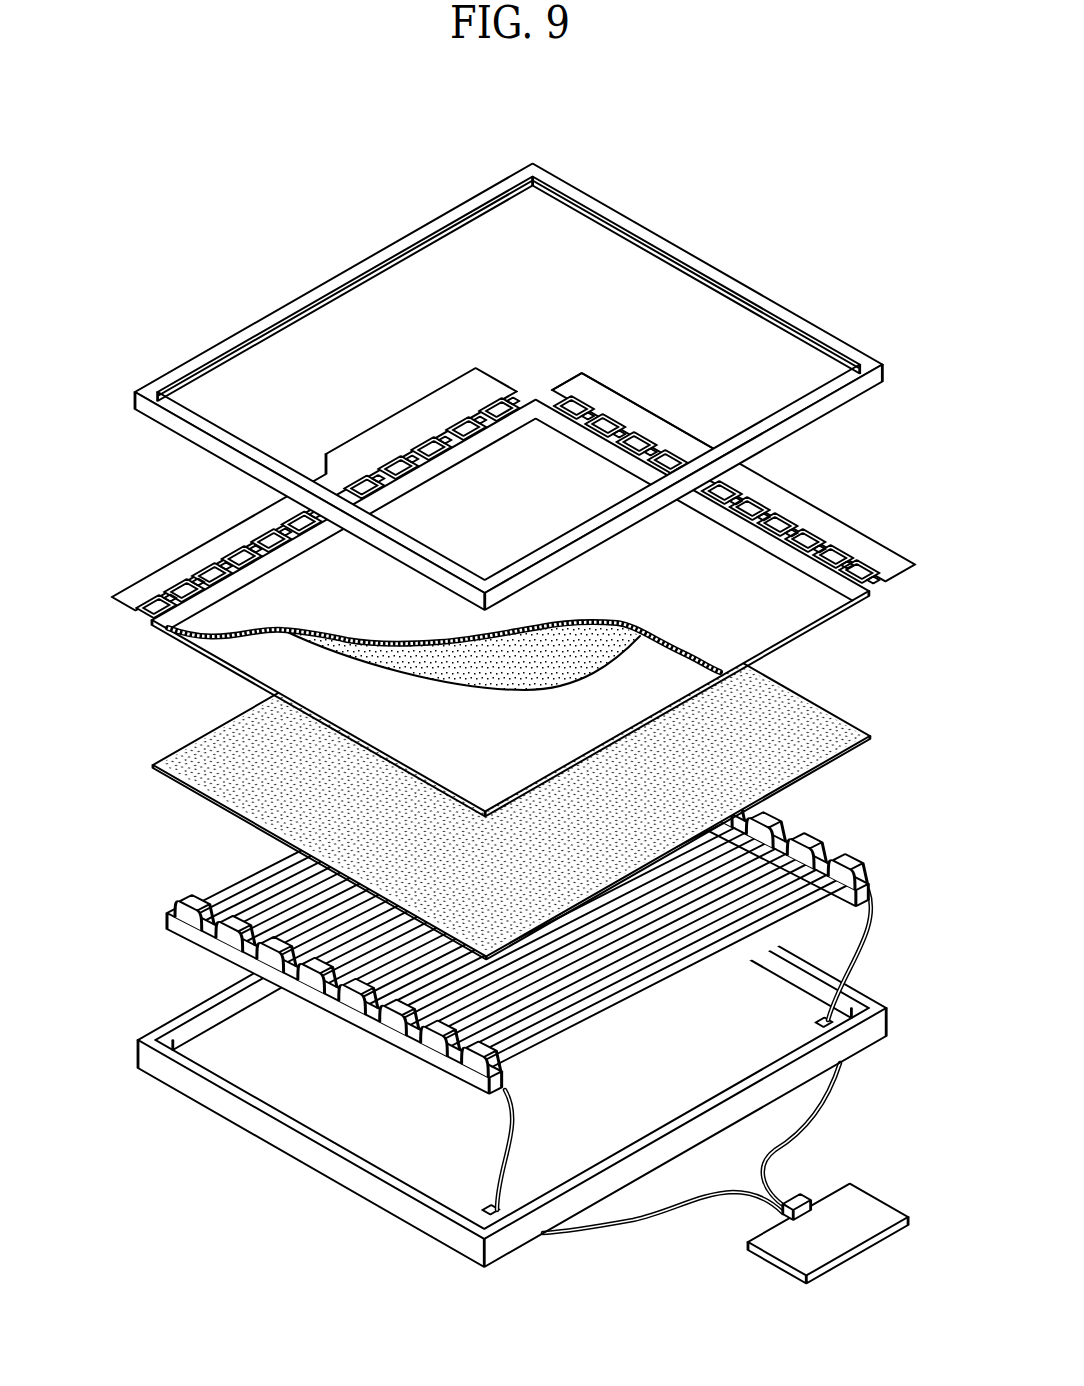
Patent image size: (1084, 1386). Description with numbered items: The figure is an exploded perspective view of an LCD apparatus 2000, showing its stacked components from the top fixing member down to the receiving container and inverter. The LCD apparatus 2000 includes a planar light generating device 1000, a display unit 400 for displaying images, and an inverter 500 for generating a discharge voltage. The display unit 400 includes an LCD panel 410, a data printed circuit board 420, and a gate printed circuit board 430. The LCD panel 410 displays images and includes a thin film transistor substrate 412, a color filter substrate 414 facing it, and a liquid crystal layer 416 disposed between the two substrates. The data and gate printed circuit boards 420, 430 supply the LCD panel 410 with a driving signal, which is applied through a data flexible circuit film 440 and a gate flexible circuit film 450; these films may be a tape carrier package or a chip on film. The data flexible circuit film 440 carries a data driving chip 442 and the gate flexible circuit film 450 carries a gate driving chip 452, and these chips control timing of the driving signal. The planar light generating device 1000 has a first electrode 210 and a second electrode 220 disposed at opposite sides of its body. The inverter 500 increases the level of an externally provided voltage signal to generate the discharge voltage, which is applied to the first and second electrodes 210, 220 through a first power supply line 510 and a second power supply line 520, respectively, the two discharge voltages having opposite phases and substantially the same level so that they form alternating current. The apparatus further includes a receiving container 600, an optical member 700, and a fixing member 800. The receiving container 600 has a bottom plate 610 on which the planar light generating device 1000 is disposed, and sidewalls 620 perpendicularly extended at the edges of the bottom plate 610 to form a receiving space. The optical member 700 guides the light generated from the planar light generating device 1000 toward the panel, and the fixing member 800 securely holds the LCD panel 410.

The LCD apparatus 2000 is at (431, 146).
The fixing member 800 is at (170, 462).
The display unit 400 is at (512, 568).
The LCD panel 410 is at (547, 608).
The thin film transistor substrate 412 is at (511, 608).
The color filter substrate 414 is at (511, 615).
The liquid crystal layer 416 is at (593, 643).
The data printed circuit board 420 is at (421, 423).
The gate printed circuit board 430 is at (505, 576).
The data flexible circuit film 440 is at (327, 508).
The data driving chip 442 is at (341, 500).
The gate flexible circuit film 450 is at (632, 419).
The gate driving chip 452 is at (719, 491).
The optical member 700 is at (158, 778).
The planar light generating device 1000 is at (482, 910).
The first electrode 210 is at (340, 993).
The second electrode 220 is at (706, 806).
The receiving container 600 is at (499, 1038).
The bottom plate 610 is at (418, 1142).
The sidewalls 620 is at (268, 1128).
The inverter 500 is at (729, 1206).
The first power supply line 510 is at (620, 1220).
The second power supply line 520 is at (773, 1170).